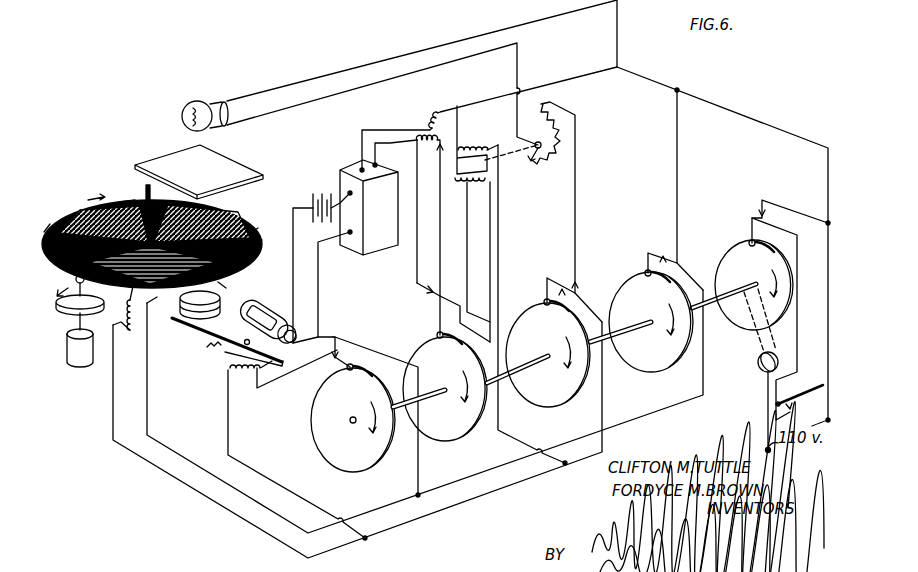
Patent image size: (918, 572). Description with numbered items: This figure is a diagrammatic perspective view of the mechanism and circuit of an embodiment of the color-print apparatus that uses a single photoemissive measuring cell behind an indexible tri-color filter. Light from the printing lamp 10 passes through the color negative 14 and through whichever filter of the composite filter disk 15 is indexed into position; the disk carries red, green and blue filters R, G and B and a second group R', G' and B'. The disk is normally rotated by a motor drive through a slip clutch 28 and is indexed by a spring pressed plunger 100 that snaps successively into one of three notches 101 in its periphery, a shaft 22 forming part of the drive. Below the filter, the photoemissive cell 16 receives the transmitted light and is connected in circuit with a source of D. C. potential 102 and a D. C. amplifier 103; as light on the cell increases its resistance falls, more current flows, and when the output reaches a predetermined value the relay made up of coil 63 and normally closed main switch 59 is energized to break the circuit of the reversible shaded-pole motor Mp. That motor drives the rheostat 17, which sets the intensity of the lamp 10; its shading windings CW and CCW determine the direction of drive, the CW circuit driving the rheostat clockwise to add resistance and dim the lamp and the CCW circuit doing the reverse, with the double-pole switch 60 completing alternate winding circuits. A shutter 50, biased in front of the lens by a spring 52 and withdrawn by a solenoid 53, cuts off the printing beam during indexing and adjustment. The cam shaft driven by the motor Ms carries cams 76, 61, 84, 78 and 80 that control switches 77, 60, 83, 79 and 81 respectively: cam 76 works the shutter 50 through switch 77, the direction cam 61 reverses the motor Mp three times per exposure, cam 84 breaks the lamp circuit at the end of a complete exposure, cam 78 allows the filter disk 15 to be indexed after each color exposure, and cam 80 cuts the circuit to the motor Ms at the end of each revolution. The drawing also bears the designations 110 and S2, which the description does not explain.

The printing lamp 10 is at (183, 106).
The color negative 14 is at (236, 170).
The shaft 22 is at (142, 190).
The notches 101 is at (70, 213).
The green filter G is at (122, 189).
The green filter G' is at (32, 219).
The red filter R is at (264, 219).
The red filter R' is at (269, 233).
The composite filter disk 15 is at (258, 256).
The blue filter B' is at (227, 273).
The blue filter B is at (156, 304).
The photoemissive cell 16 is at (258, 301).
The slip clutch 28 is at (64, 310).
The motor 110 is at (76, 355).
The spring pressed plunger 100 is at (128, 336).
The shutter 50 is at (204, 338).
The spring 52 is at (210, 354).
The solenoid 53 is at (228, 376).
The source of D. C. potential 102 is at (314, 190).
The D. C. amplifier 103 is at (374, 252).
The main switch 59 is at (412, 146).
The relay coil 63 is at (438, 118).
The reversible shaded-pole motor Mp is at (470, 150).
The shading winding CW is at (464, 179).
The shading winding CCW is at (477, 182).
The rheostat 17 is at (546, 168).
The double-pole switch 60 is at (442, 309).
The switch 77 is at (333, 338).
The cam 76 is at (312, 422).
The direction cam 61 is at (446, 433).
The switch 83 is at (547, 279).
The cam 84 is at (543, 392).
The switch 79 is at (650, 252).
The cam 78 is at (640, 367).
The switch 81 is at (760, 205).
The cam 80 is at (741, 313).
The motor Ms is at (758, 366).
The switch S2 is at (802, 392).